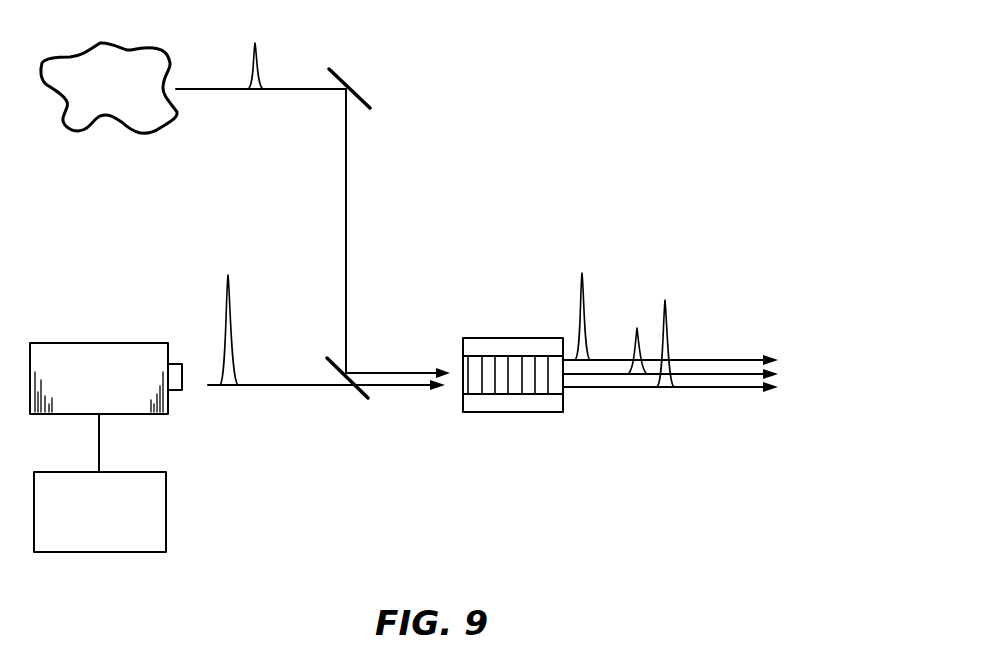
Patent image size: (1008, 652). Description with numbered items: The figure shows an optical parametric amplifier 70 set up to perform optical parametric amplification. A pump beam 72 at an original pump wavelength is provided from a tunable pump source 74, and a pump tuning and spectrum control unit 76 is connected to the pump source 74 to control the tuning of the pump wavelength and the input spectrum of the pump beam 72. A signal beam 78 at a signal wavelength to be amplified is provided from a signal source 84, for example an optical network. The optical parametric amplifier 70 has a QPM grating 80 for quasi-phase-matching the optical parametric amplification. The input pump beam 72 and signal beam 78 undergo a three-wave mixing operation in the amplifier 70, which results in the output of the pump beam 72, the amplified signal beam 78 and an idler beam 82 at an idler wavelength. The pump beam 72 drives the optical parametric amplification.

The optical parametric amplifier 70 is at (513, 378).
The pump beam 72 is at (250, 387).
The tunable pump source 74 is at (125, 343).
The pump tuning and spectrum control unit 76 is at (166, 506).
The signal beam 78 is at (229, 88).
The QPM grating 80 is at (484, 355).
The idler beam 82 is at (647, 390).
The signal source 84 is at (120, 127).